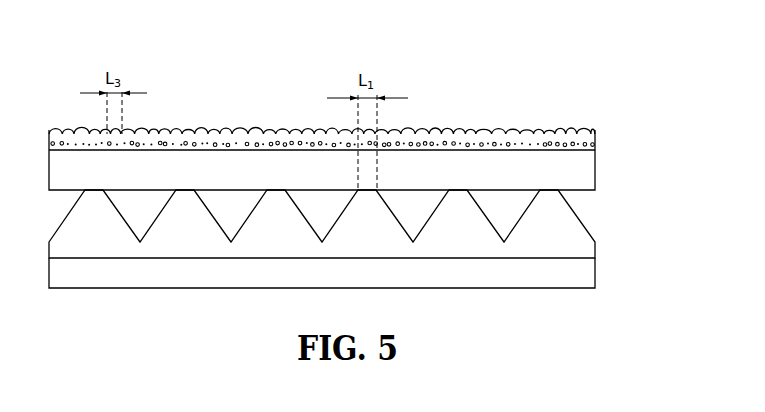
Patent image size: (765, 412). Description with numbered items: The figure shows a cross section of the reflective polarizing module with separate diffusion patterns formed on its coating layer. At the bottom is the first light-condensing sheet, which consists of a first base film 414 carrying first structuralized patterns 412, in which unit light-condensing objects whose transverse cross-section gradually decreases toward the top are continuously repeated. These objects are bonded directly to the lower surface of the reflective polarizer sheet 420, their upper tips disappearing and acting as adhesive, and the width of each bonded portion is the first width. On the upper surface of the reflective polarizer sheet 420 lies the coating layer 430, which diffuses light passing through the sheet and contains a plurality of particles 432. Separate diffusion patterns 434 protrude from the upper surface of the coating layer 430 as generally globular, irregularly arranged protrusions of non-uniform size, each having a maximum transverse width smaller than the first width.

The first structuralized patterns 412 is at (567, 238).
The first base film 414 is at (580, 278).
The reflective polarizer sheet 420 is at (590, 173).
The coating layer 430 is at (352, 115).
The particles 432 is at (247, 142).
The separate diffusion patterns 434 is at (558, 137).